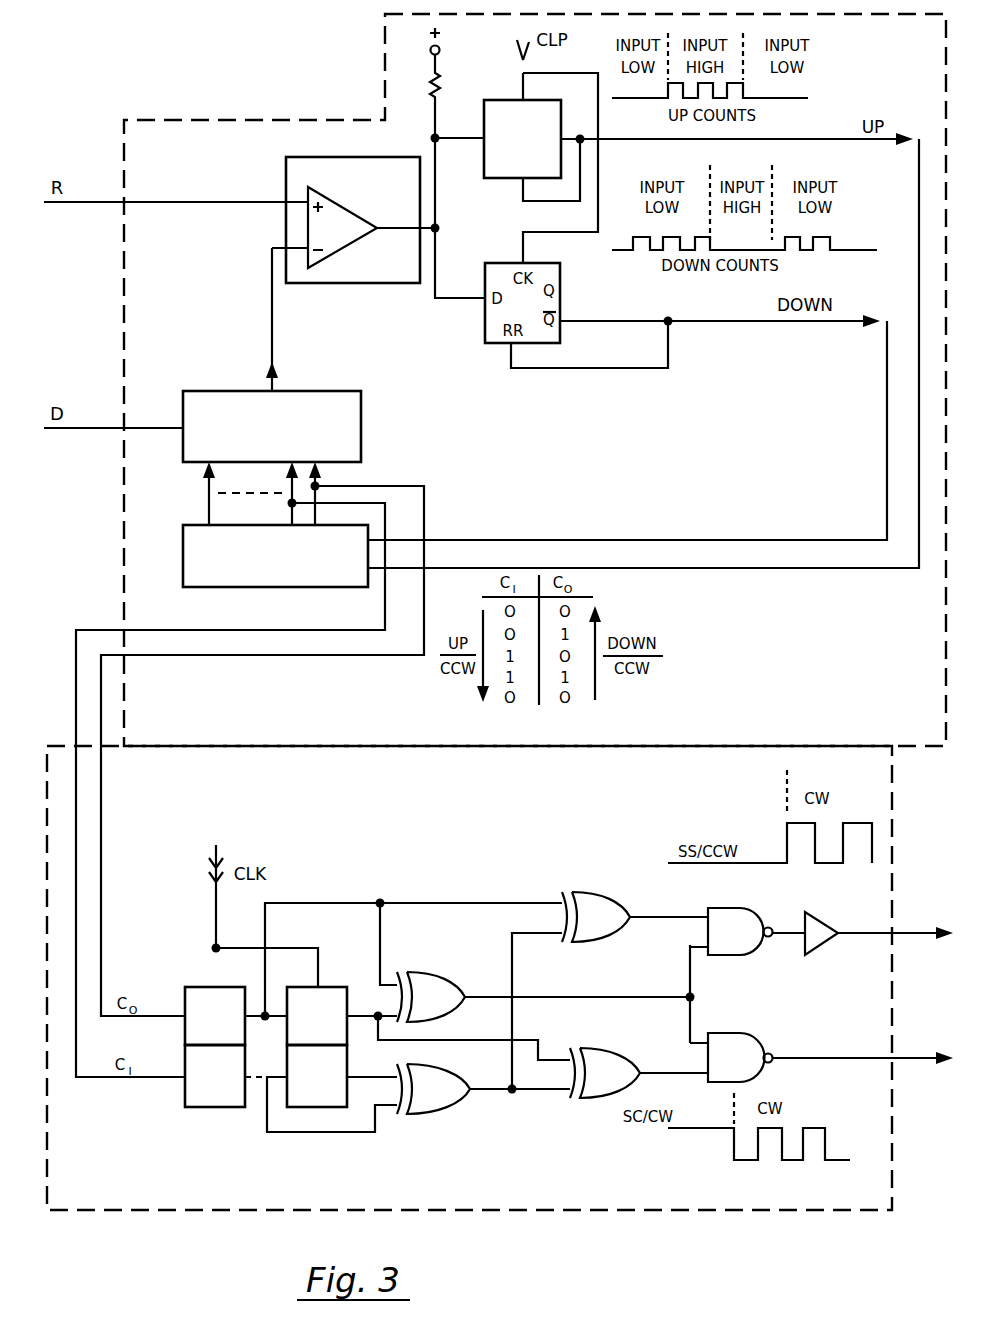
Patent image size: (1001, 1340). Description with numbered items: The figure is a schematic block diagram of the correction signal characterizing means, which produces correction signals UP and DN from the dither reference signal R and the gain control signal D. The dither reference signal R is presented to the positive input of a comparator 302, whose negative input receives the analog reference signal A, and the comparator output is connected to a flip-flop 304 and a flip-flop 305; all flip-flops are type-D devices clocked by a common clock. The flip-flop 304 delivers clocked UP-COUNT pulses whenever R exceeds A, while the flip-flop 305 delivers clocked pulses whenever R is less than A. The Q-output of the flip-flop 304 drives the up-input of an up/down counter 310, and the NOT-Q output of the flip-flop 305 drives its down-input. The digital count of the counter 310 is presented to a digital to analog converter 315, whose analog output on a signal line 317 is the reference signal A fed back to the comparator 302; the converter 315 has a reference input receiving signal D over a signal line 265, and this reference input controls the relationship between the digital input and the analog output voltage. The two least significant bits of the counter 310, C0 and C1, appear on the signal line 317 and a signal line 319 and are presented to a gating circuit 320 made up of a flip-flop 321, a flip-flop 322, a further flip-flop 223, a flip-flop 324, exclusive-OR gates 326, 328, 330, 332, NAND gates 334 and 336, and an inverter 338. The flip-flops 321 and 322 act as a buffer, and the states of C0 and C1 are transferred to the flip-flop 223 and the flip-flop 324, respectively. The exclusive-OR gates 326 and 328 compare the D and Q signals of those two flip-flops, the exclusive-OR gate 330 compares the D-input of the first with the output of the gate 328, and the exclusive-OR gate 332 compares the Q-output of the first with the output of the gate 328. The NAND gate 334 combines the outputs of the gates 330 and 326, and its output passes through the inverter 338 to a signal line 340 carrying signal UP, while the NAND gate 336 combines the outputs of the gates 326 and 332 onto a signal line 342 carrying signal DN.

The comparator 302 is at (331, 157).
The flip-flop 304 is at (476, 100).
The flip-flop 305 is at (461, 229).
The signal line 265 is at (152, 428).
The digital to analog converter 315 is at (361, 424).
The signal line 317 is at (273, 342).
The signal line 319 is at (388, 523).
The up/down counter 310 is at (231, 587).
The gating circuit 320 is at (328, 745).
The flip-flop 321 is at (185, 995).
The flip-flop 322 is at (197, 1107).
The flip-flop 223 is at (355, 990).
The flip-flop 324 is at (335, 1107).
The exclusive-OR gate 326 is at (438, 975).
The exclusive-OR gate 328 is at (453, 1070).
The exclusive-OR gate 330 is at (600, 893).
The exclusive-OR gate 332 is at (598, 1050).
The NAND gate 334 is at (728, 908).
The NAND gate 336 is at (732, 1033).
The inverter 338 is at (811, 950).
The signal line 340 is at (870, 934).
The signal line 342 is at (853, 1057).